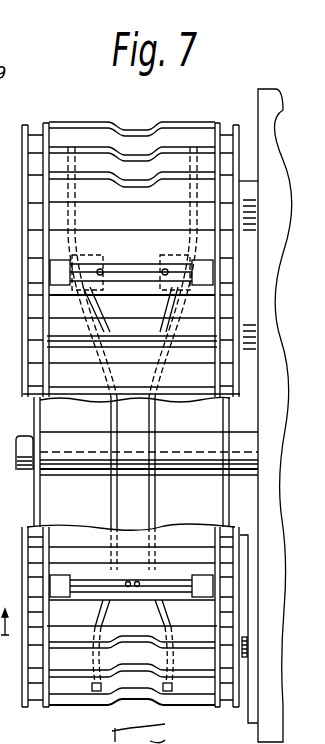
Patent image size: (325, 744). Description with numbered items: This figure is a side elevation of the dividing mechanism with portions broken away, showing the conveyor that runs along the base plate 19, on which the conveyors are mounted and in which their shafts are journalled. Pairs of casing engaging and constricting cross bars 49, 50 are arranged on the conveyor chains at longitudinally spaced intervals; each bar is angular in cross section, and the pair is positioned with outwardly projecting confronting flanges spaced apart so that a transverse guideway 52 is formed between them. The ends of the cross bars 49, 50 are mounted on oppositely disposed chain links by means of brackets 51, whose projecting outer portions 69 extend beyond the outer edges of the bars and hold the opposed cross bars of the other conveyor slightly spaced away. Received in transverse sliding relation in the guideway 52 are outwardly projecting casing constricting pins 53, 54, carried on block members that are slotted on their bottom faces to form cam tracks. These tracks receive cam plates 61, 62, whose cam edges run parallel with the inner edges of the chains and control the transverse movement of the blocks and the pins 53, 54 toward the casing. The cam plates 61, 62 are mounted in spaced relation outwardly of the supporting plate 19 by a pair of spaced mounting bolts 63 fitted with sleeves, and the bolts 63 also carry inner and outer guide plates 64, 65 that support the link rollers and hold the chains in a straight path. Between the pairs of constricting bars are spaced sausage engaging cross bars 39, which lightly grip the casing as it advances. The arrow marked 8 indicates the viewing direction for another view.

The base plate 19 is at (258, 727).
The plate members 39 is at (164, 150).
The cross bar 49 is at (55, 241).
The projecting outer portions 69 is at (55, 273).
The casing constricting pin 53 is at (100, 262).
The casing constricting pin 54 is at (166, 262).
The cross bar 50 is at (72, 298).
The transverse guideway 52 is at (92, 594).
The cam plate 61 is at (108, 410).
The cam plate 62 is at (160, 405).
The outer guide plate 65 is at (42, 490).
The inner guide plate 64 is at (226, 497).
The mounting bolts 63 is at (24, 470).
The brackets 51 is at (48, 578).
The section arrow 8 is at (6, 635).